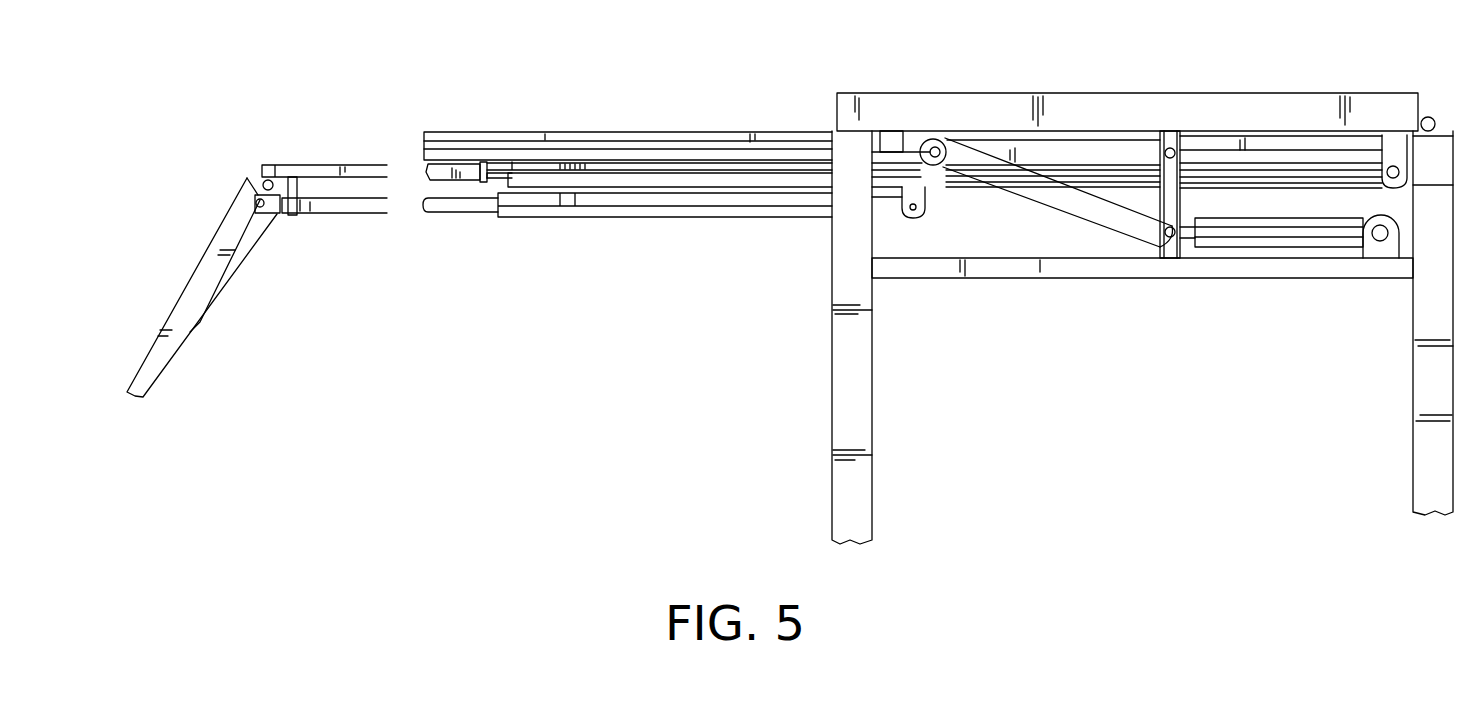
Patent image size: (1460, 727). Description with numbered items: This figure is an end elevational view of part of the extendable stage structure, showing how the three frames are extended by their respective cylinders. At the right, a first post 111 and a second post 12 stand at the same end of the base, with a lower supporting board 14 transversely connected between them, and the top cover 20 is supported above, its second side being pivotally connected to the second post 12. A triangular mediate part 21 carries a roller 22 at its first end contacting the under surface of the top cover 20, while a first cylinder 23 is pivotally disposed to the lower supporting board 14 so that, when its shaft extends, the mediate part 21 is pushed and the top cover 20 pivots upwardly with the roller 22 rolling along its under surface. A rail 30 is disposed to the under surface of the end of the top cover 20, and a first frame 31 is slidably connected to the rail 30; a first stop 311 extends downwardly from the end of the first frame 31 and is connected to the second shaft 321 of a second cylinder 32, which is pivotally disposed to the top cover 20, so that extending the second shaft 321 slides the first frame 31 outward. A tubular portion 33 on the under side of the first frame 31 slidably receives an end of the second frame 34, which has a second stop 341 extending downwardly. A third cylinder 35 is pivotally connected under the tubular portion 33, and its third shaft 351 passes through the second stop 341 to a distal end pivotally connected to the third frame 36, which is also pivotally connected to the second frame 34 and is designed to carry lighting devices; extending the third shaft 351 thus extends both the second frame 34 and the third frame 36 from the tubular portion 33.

The second post 12 is at (1418, 355).
The lower supporting board 14 is at (1046, 267).
The top cover 20 is at (1153, 100).
The mediate part 21 is at (1070, 150).
The roller 22 is at (940, 135).
The first cylinder 23 is at (1300, 240).
The rail 30 is at (902, 137).
The first frame 31 is at (710, 138).
The first stop 311 is at (490, 168).
The second cylinder 32 is at (1287, 173).
The second shaft 321 is at (550, 170).
The tubular portion 33 is at (623, 190).
The second frame 34 is at (352, 165).
The second stop 341 is at (295, 216).
The third cylinder 35 is at (773, 212).
The third shaft 351 is at (355, 213).
The third frame 36 is at (168, 330).
The first post 111 is at (857, 402).